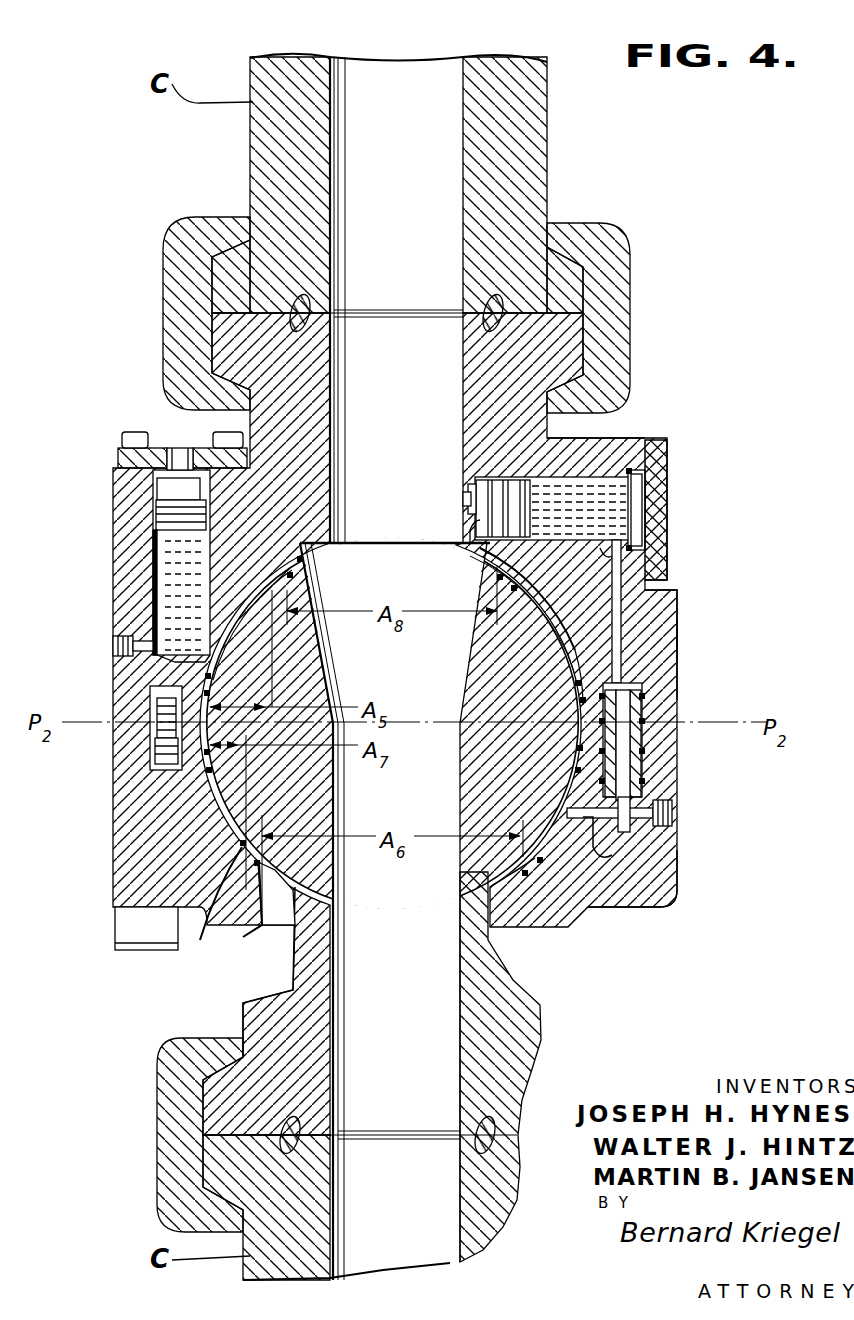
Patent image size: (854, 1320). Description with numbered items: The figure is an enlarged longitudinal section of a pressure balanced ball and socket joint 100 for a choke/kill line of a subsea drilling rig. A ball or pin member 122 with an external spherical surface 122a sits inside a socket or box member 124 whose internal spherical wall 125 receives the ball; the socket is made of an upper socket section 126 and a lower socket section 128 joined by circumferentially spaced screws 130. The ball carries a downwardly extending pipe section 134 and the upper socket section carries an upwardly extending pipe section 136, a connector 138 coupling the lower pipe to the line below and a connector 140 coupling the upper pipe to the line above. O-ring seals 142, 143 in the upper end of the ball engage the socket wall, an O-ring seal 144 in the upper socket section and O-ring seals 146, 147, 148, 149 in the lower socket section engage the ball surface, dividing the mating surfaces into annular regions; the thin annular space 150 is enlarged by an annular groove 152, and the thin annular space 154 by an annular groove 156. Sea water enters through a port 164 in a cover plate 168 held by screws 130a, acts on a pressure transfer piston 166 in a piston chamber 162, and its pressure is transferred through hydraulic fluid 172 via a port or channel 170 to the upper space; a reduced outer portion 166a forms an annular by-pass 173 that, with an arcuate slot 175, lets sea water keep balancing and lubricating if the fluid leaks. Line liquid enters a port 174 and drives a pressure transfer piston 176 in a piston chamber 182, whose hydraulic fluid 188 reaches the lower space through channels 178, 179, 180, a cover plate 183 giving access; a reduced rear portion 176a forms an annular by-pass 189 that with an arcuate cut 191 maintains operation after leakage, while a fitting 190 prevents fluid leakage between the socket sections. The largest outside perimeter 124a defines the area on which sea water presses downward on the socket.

The pressure balanced ball and socket joint 100 is at (676, 256).
The ball or pin member 122 is at (522, 975).
The external spherical surface 122a is at (500, 576).
The socket or box member 124 is at (648, 426).
The largest outside perimeter 124a is at (680, 633).
The internal spherical wall 125 is at (567, 650).
The upper socket section 126 is at (667, 605).
The lower socket section 128 is at (667, 872).
The screws 130 is at (137, 933).
The screws 130a is at (117, 431).
The pipe section 134 is at (277, 988).
The pipe section 136 is at (563, 340).
The connector 138 is at (168, 1163).
The connector 140 is at (187, 288).
The O-ring seal 142 is at (292, 572).
The O-ring seal 143 is at (290, 584).
The O-ring seal 144 is at (204, 678).
The O-ring seal 146 is at (200, 751).
The O-ring seal 147 is at (204, 771).
The O-ring seal 148 is at (215, 907).
The O-ring seal 149 is at (253, 913).
The thin annular space 150 is at (270, 622).
The annular groove 152 is at (577, 644).
The thin annular space 154 is at (570, 784).
The annular groove 156 is at (613, 908).
The piston chamber 162 is at (163, 551).
The port 164 is at (173, 447).
The pressure transfer piston 166 is at (150, 520).
The upper or outer portion of the pressure transfer piston 166a is at (172, 493).
The cover plate 168 is at (125, 456).
The port or channel 170 is at (125, 640).
The hydraulic fluid 172 is at (170, 583).
The annular by-pass 173 is at (157, 481).
The port 174 is at (466, 499).
The arcuate slot 175 is at (208, 632).
The pressure transfer piston 176 is at (490, 470).
The rear portion of the pressure transfer piston 176a is at (474, 490).
The channel 178 is at (618, 656).
The channel 179 is at (624, 796).
The channel 180 is at (618, 846).
The piston chamber 182 is at (642, 486).
The cover plate 183 is at (657, 453).
The hydraulic fluid 188 is at (610, 513).
The annular by-pass 189 is at (470, 546).
The fitting 190 is at (642, 706).
The arcuate cut 191 is at (603, 550).